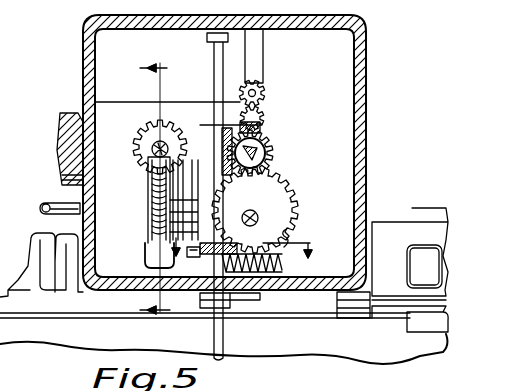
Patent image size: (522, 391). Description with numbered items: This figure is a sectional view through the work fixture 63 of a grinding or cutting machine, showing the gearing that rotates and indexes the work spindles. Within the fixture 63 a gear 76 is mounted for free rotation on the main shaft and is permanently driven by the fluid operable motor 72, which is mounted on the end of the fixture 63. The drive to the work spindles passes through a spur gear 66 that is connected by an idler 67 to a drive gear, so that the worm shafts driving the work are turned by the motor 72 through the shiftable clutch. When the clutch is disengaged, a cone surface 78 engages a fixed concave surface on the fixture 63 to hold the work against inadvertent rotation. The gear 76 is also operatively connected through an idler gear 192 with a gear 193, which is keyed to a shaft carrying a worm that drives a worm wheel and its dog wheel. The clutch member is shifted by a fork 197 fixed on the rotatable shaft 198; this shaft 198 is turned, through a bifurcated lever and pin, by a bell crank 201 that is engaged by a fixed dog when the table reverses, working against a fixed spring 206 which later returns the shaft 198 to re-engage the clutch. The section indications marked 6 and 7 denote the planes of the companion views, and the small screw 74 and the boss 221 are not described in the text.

The section line 6- 6 is at (147, 190).
The section line 7- 7 is at (245, 254).
The fixture 63 is at (368, 37).
The spur gear 66 is at (263, 91).
The idler 67 is at (266, 117).
The fluid operable motor 72 is at (393, 228).
The screw 74 is at (258, 218).
The gear 76 is at (272, 156).
The cone surface 78 is at (295, 203).
The idler gear 192 is at (207, 117).
The gear 193 is at (145, 121).
The fork 197 is at (258, 128).
The rotatable shaft 198 is at (213, 338).
The bell crank 201 is at (194, 258).
The spring 206 is at (186, 266).
The boss 221 is at (255, 293).